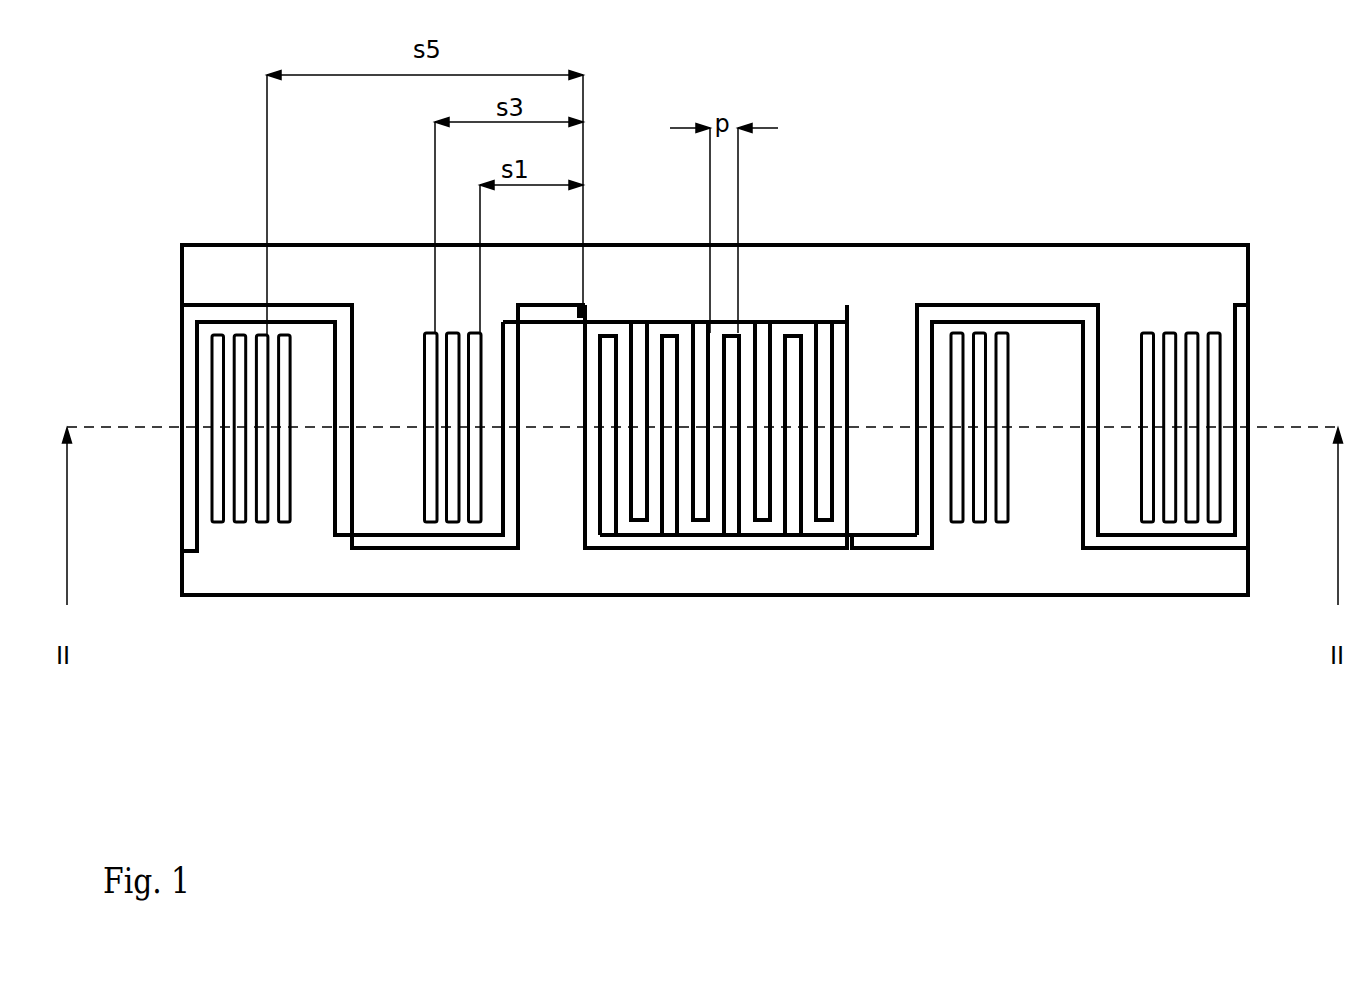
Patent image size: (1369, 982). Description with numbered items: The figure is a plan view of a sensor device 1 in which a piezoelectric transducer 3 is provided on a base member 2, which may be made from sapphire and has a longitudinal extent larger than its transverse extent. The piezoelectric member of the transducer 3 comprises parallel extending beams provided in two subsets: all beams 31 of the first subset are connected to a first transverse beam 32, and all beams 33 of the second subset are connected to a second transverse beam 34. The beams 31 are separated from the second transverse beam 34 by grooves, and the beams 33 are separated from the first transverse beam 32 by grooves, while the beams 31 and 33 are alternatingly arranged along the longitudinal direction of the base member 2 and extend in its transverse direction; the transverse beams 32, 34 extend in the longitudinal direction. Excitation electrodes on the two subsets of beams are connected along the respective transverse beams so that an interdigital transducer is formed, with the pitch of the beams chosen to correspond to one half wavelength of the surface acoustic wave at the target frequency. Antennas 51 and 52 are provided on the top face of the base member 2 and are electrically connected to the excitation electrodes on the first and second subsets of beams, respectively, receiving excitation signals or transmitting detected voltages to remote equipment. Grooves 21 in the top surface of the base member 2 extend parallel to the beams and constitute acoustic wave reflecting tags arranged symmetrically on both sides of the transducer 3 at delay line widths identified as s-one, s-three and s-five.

The sensor device 1 is at (790, 118).
The base member 2 is at (1070, 236).
The piezoelectric transducer 3 is at (657, 296).
The grooves 21 is at (960, 513).
The beams of the first subset 31 is at (608, 455).
The first transverse beam 32 is at (647, 542).
The beams of the second subset 33 is at (638, 470).
The second transverse beam 34 is at (773, 315).
The antenna 51 is at (938, 313).
The antenna 52 is at (340, 542).